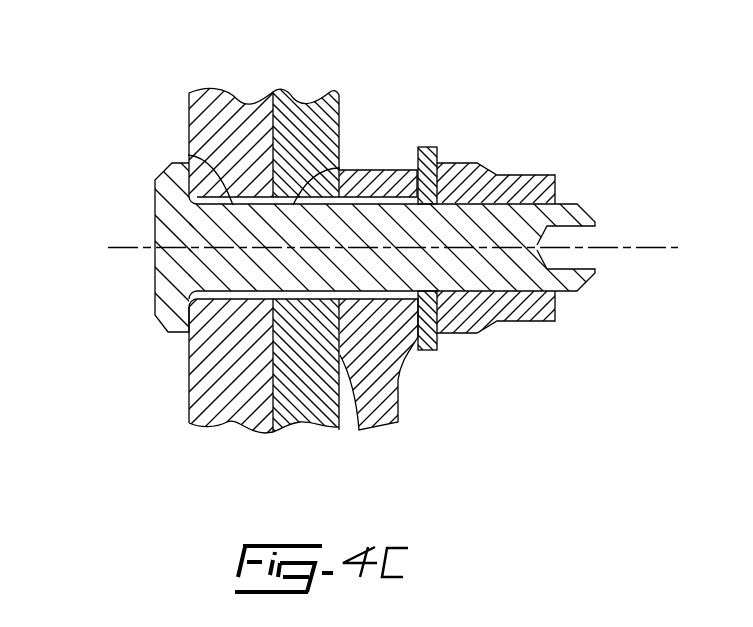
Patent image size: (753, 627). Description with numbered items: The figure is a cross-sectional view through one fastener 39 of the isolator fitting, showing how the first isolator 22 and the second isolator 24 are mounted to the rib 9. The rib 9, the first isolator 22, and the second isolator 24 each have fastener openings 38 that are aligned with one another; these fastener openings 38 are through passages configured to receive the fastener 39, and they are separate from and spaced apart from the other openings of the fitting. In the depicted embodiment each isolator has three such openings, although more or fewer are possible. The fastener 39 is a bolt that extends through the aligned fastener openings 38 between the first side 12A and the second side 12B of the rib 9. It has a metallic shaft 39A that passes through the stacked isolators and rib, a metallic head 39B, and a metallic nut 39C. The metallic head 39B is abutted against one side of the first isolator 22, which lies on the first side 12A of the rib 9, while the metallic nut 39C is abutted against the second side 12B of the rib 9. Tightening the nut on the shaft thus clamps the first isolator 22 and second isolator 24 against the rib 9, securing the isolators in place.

The first isolator 22 is at (222, 92).
The second isolator 24 is at (305, 88).
The fastener openings 38 is at (188, 155).
The fastener 39 is at (370, 292).
The metallic shaft 39A is at (230, 232).
The metallic head 39B is at (153, 300).
The metallic nut 39C is at (473, 178).
The first side 12A is at (358, 407).
The second side 12B is at (398, 392).
The rib 9 is at (373, 408).